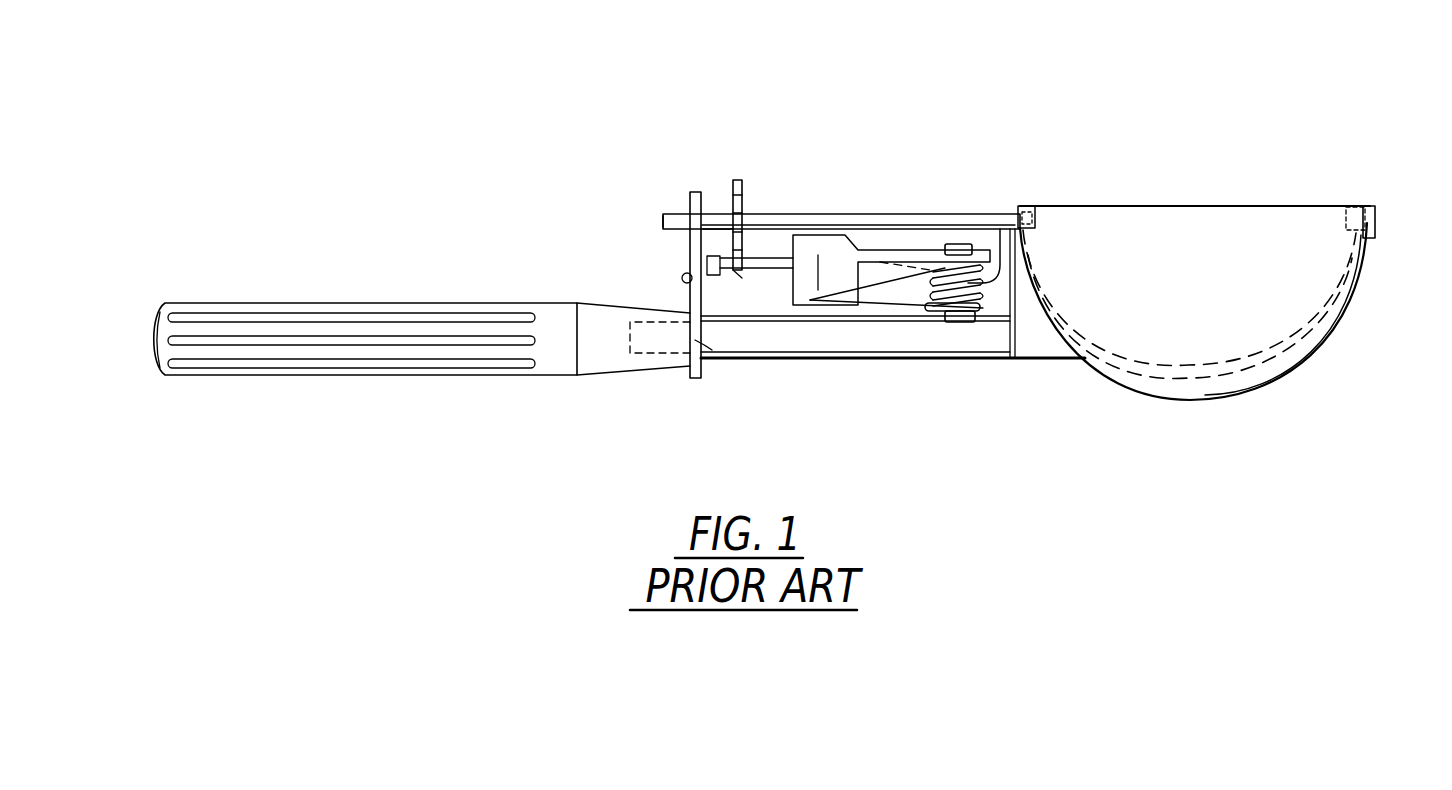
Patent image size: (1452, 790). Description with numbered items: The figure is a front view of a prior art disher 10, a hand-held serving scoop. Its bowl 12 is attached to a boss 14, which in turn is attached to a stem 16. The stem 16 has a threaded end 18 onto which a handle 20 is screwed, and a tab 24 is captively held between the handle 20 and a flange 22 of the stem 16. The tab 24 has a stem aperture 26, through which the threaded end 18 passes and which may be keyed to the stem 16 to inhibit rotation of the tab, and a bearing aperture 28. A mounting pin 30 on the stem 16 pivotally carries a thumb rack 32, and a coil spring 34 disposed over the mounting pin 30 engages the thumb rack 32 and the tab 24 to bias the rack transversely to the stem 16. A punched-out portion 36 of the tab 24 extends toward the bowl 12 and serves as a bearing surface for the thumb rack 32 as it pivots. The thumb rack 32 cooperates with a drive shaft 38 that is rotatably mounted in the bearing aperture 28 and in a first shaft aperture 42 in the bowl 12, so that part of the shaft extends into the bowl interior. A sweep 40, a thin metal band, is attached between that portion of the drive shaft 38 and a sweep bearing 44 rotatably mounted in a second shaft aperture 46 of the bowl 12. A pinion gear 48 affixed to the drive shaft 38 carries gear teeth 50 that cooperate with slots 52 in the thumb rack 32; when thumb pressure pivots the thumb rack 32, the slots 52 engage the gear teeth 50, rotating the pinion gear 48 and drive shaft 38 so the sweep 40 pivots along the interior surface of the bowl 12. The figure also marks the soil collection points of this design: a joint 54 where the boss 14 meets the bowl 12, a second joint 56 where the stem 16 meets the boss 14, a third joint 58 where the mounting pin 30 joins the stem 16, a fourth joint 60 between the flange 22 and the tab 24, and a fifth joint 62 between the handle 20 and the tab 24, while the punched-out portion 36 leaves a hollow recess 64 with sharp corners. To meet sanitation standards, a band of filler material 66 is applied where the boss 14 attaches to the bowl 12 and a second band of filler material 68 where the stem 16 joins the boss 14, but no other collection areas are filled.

The prior art disher 10 is at (942, 88).
The bowl 12 is at (1222, 205).
The boss 14 is at (1033, 358).
The stem 16 is at (822, 345).
The threaded end 18 is at (623, 357).
The handle 20 is at (343, 303).
The flange 22 is at (704, 350).
The tab 24 is at (692, 212).
The stem aperture 26 is at (668, 357).
The bearing aperture 28 is at (688, 212).
The mounting pin 30 is at (958, 244).
The thumb rack 32 is at (818, 250).
The coil spring 34 is at (1000, 214).
The punched-out portion 36 is at (711, 212).
The drive shaft 38 is at (887, 214).
The sweep 40 is at (1160, 374).
The first shaft aperture 42 is at (1036, 212).
The sweep bearing 44 is at (1352, 206).
The second shaft aperture 46 is at (1380, 210).
The pinion gear 48 is at (742, 180).
The gear teeth 50 is at (709, 278).
The slots 52 is at (768, 240).
The joint 54 is at (1088, 362).
The second joint 56 is at (1000, 358).
The third joint 58 is at (940, 320).
The fourth joint 60 is at (701, 365).
The fifth joint 62 is at (690, 370).
The hollow recess 64 is at (684, 274).
The band of filler material 66 is at (1053, 358).
The second band of filler material 68 is at (973, 360).